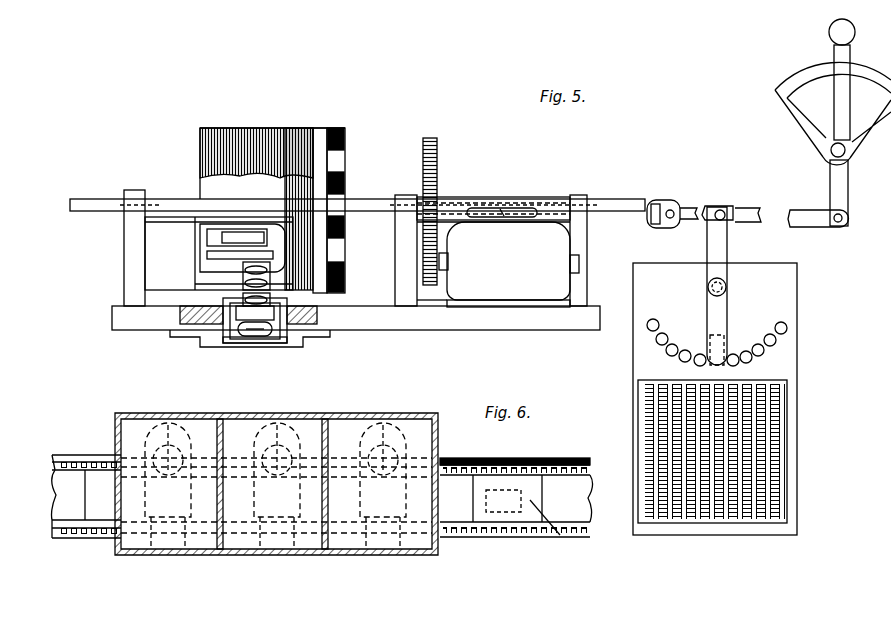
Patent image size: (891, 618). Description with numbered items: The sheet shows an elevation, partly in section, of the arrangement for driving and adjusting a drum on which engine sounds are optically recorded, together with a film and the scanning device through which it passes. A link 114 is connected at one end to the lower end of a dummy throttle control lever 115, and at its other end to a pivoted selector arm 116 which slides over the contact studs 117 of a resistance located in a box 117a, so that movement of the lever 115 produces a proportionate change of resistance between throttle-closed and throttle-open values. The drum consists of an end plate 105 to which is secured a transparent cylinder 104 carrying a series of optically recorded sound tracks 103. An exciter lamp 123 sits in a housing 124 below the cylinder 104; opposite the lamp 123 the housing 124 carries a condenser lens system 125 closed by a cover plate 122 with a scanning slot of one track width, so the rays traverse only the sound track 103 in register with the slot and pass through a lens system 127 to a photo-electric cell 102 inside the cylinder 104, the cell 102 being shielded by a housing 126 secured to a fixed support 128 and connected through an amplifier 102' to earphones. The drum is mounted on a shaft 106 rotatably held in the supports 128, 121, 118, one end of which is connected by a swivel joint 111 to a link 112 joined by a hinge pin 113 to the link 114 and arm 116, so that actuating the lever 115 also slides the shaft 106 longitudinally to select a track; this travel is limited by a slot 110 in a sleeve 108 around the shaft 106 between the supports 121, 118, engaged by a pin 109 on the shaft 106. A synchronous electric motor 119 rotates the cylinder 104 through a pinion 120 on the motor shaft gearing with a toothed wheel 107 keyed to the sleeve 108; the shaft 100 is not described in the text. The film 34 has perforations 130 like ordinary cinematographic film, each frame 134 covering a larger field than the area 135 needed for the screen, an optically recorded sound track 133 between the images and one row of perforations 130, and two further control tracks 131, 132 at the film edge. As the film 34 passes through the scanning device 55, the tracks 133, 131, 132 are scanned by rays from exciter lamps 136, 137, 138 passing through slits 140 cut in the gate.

In FIG. 5, the shaft 100 is at (100, 199).
In FIG. 5, the photo-electric cell 102 is at (219, 222).
In FIG. 5, the amplifier 102' is at (216, 248).
In FIG. 5, the sound tracks 103 is at (240, 140).
In FIG. 5, the transparent cylinder 104 is at (318, 160).
In FIG. 5, the end plate 105 is at (340, 130).
In FIG. 5, the shaft 106 is at (382, 200).
In FIG. 5, the toothed wheel 107 is at (430, 138).
In FIG. 5, the sleeve 108 is at (448, 200).
In FIG. 5, the pin 109 is at (508, 208).
In FIG. 5, the slot 110 is at (540, 208).
In FIG. 5, the swivel joint 111 is at (660, 205).
In FIG. 5, the link 112 is at (678, 208).
In FIG. 5, the hinge pin 113 is at (721, 208).
In FIG. 5, the link 114 is at (752, 212).
In FIG. 5, the dummy throttle control lever 115 is at (838, 56).
In FIG. 5, the selector arm 116 is at (724, 300).
In FIG. 5, the contact studs 117 is at (784, 328).
In FIG. 5, the box 117a is at (790, 397).
In FIG. 5, the support 118 is at (580, 266).
In FIG. 5, the synchronous electric motor 119 is at (515, 282).
In FIG. 5, the pinion 120 is at (428, 262).
In FIG. 5, the support 121 is at (398, 250).
In FIG. 5, the cover plate 122 is at (285, 340).
In FIG. 5, the exciter lamp 123 is at (258, 336).
In FIG. 5, the housing 124 is at (245, 320).
In FIG. 5, the condenser lens system 125 is at (225, 308).
In FIG. 5, the housing 126 is at (200, 283).
In FIG. 5, the lens system 127 is at (245, 272).
In FIG. 5, the fixed support 128 is at (124, 250).
In FIG. 6, the perforations 130 is at (476, 468).
In FIG. 6, the control track 131 is at (565, 462).
In FIG. 6, the control track 132 is at (580, 461).
In FIG. 6, the sound track 133 is at (590, 485).
In FIG. 6, the frame 134 is at (560, 535).
In FIG. 6, the area 135 is at (520, 510).
In FIG. 6, the exciter lamp 136 is at (386, 420).
In FIG. 6, the exciter lamp 137 is at (278, 420).
In FIG. 6, the exciter lamp 138 is at (168, 420).
In FIG. 6, the slits 140 is at (274, 503).
In FIG. 6, the film 34 is at (468, 512).
In FIG. 6, the scanning device 55 is at (392, 550).